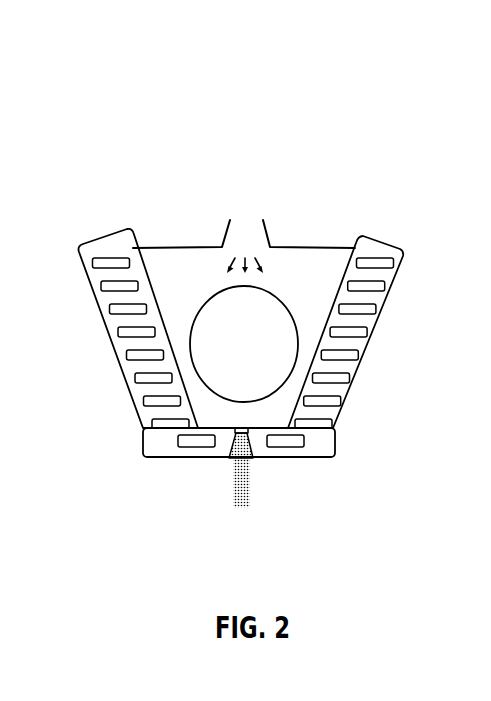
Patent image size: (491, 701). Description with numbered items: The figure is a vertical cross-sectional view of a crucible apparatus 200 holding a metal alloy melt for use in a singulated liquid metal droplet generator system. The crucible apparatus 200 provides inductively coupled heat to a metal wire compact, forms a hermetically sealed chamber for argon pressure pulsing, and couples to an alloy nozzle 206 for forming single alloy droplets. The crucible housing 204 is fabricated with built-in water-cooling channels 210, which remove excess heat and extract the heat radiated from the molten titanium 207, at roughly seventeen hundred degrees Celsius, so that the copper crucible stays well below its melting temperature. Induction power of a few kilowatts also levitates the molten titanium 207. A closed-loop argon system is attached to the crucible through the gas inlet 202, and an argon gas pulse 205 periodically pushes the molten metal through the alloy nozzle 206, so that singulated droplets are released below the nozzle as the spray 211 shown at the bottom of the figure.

The crucible apparatus 200 is at (360, 124).
The gas inlet 202 is at (226, 229).
The crucible housing 204 is at (402, 252).
The argon gas pulse 205 is at (228, 263).
The alloy nozzle 206 is at (228, 450).
The molten titanium 207 is at (278, 298).
The water-cooling channels 210 is at (113, 305).
The spray 211 is at (249, 483).